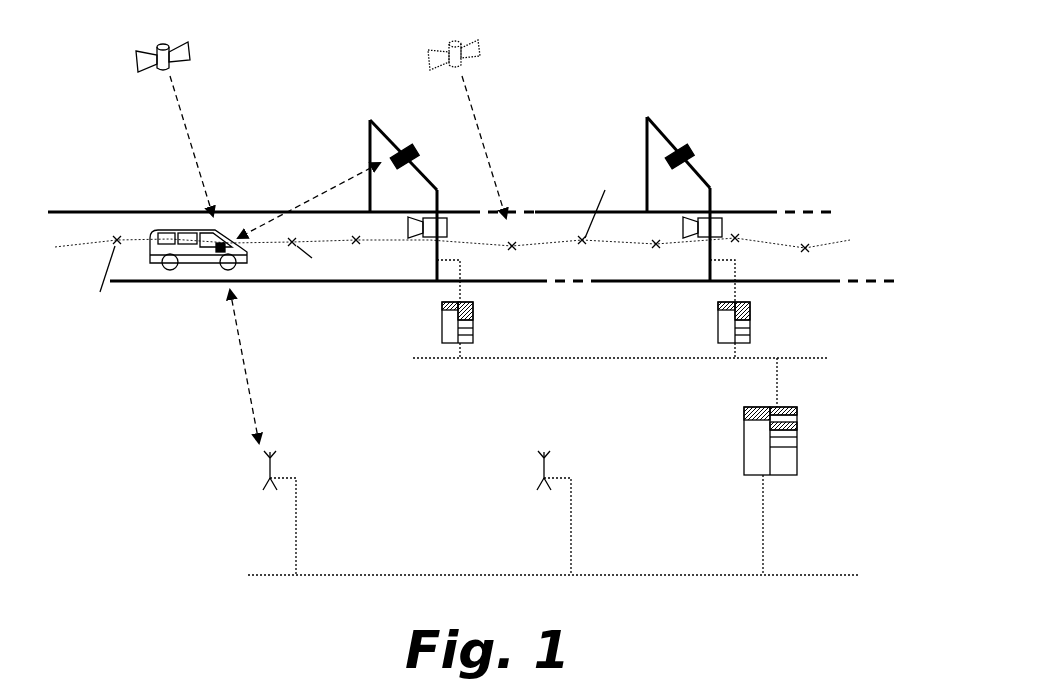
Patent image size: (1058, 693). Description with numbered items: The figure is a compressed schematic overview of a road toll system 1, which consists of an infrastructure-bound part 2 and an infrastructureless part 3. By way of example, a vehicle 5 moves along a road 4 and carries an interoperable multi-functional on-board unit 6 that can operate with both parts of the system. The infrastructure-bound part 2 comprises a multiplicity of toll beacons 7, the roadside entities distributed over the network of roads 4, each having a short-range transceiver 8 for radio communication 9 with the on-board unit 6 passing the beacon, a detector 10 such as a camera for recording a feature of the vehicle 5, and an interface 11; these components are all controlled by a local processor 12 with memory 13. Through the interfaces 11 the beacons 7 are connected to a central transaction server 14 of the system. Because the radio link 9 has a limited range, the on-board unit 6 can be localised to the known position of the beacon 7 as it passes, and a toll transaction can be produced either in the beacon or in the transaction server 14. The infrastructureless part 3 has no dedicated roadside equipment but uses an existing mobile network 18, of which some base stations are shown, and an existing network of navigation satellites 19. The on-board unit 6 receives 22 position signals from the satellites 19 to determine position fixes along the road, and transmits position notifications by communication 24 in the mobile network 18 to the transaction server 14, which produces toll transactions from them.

The road toll system 1 is at (768, 86).
The infrastructure-bound part 2 is at (471, 272).
The infrastructureless part 3 is at (553, 536).
The road 4 is at (837, 256).
The vehicle 5 is at (190, 270).
The multi-functional on-board unit 6 is at (223, 242).
The toll beacon 7 is at (668, 112).
The short-range transceiver 8 is at (412, 148).
The radio communication 9 is at (327, 182).
The detector 10 is at (447, 220).
The interface 11 is at (476, 355).
The local processor 12 is at (440, 320).
The memory 13 is at (474, 315).
The central transaction server 14 is at (799, 444).
The mobile network 18 is at (274, 462).
The navigation satellite 19 is at (138, 57).
The receiving position signals 22 is at (190, 146).
The communication in the mobile network 24 is at (245, 358).